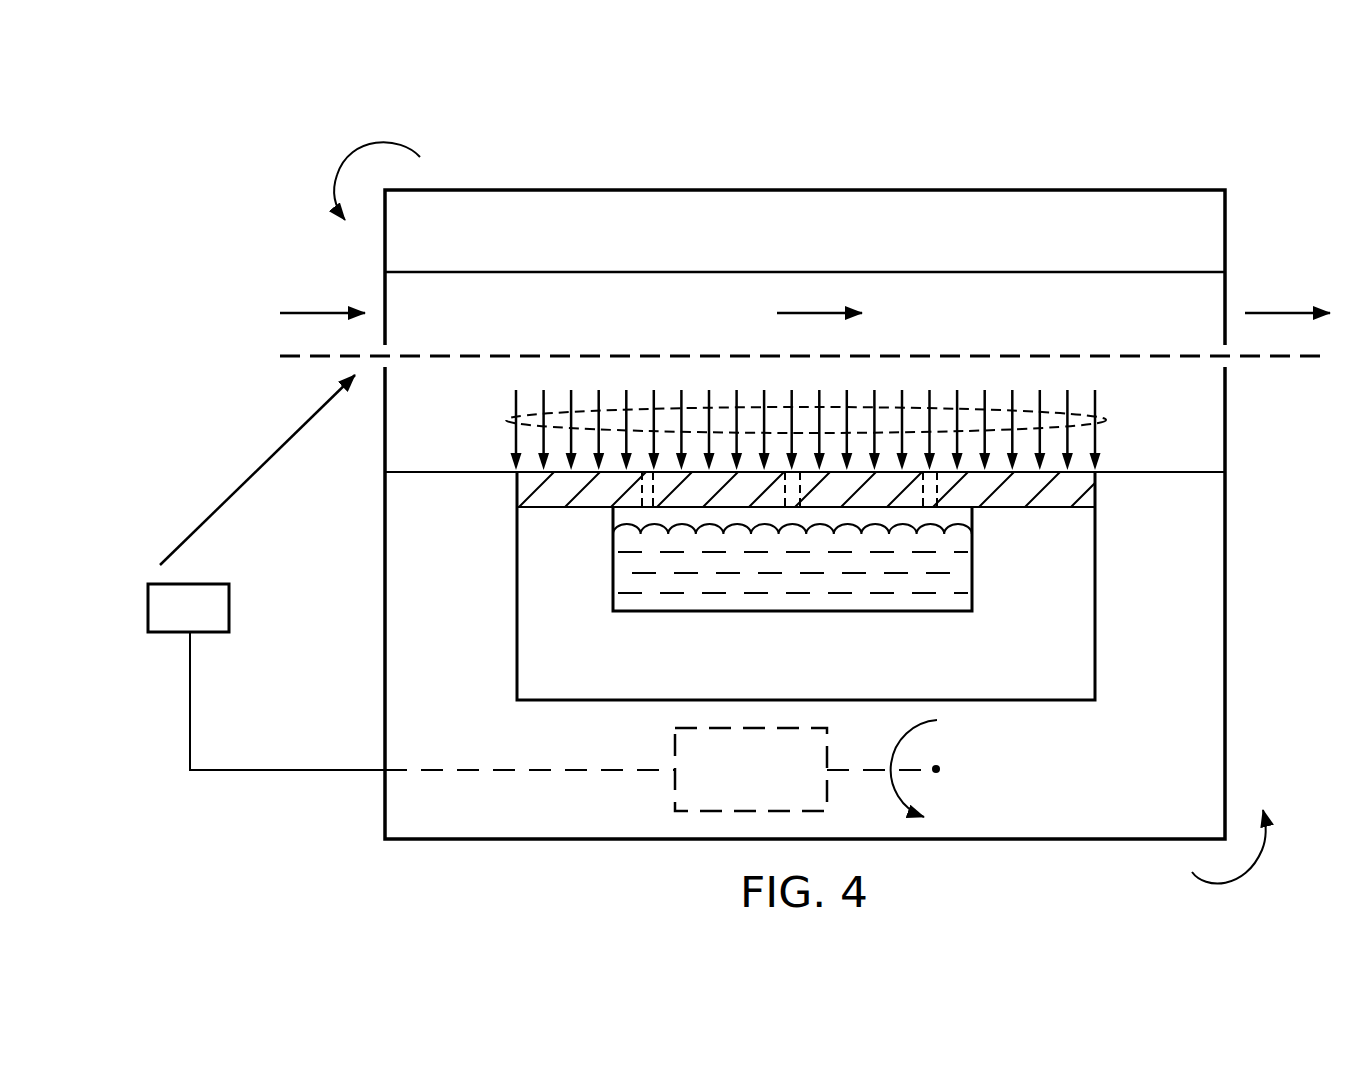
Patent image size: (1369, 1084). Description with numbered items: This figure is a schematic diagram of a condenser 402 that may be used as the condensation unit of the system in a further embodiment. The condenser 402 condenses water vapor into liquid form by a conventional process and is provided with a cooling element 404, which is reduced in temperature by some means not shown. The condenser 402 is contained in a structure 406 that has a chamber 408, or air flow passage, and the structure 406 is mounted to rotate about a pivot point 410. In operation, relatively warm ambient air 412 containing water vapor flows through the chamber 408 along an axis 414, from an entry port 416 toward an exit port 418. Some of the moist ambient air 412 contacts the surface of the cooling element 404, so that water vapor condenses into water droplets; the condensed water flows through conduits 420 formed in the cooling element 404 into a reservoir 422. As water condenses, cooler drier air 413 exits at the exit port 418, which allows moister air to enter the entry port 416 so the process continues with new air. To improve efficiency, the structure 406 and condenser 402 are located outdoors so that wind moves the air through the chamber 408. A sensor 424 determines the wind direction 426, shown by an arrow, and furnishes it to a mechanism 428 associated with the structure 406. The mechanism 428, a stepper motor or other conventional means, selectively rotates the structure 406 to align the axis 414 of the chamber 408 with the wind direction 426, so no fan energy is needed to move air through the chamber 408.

The condenser 402 is at (832, 671).
The cooling element 404 is at (1095, 495).
The structure 406 is at (897, 190).
The chamber 408 is at (590, 283).
The pivot point 410 is at (942, 769).
The ambient air 412 is at (313, 313).
The drier air 413 is at (1278, 313).
The axis 414 is at (960, 350).
The entry port 416 is at (407, 340).
The exit port 418 is at (1247, 368).
The conduits 420 is at (640, 485).
The reservoir 422 is at (708, 613).
The sensor 424 is at (148, 607).
The wind direction 426 is at (258, 468).
The mechanism 428 is at (779, 786).